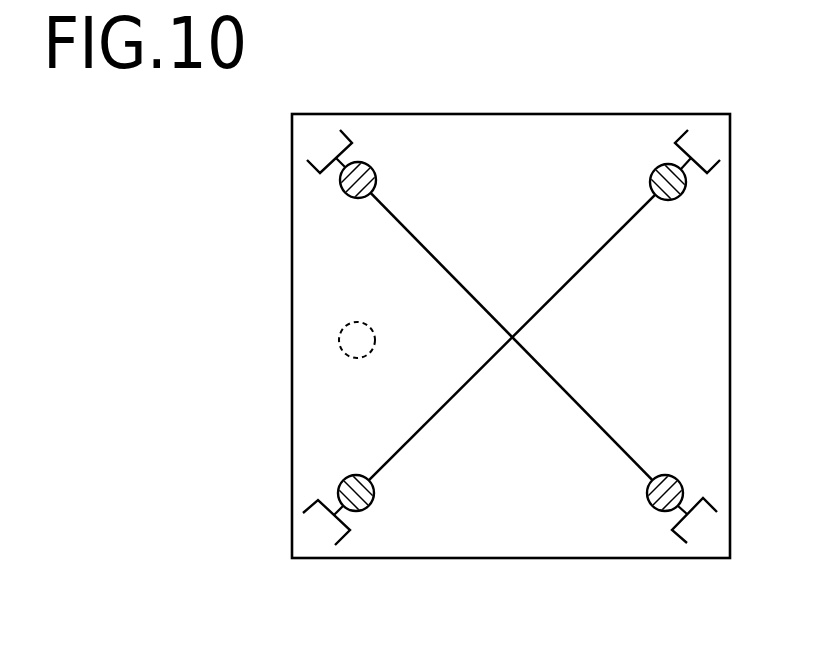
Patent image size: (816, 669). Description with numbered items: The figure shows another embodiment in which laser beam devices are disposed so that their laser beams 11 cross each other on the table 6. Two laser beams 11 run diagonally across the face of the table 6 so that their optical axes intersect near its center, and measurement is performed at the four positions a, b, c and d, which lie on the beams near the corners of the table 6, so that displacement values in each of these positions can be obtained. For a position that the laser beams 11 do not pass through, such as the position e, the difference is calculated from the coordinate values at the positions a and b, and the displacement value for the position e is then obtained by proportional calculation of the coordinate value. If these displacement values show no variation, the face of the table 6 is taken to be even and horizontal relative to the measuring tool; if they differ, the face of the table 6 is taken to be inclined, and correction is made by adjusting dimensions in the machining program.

The table 6 is at (539, 114).
The laser beams 11 is at (437, 260).
The position a is at (359, 172).
The position b is at (353, 502).
The position c is at (670, 501).
The position d is at (670, 173).
The position e is at (348, 324).